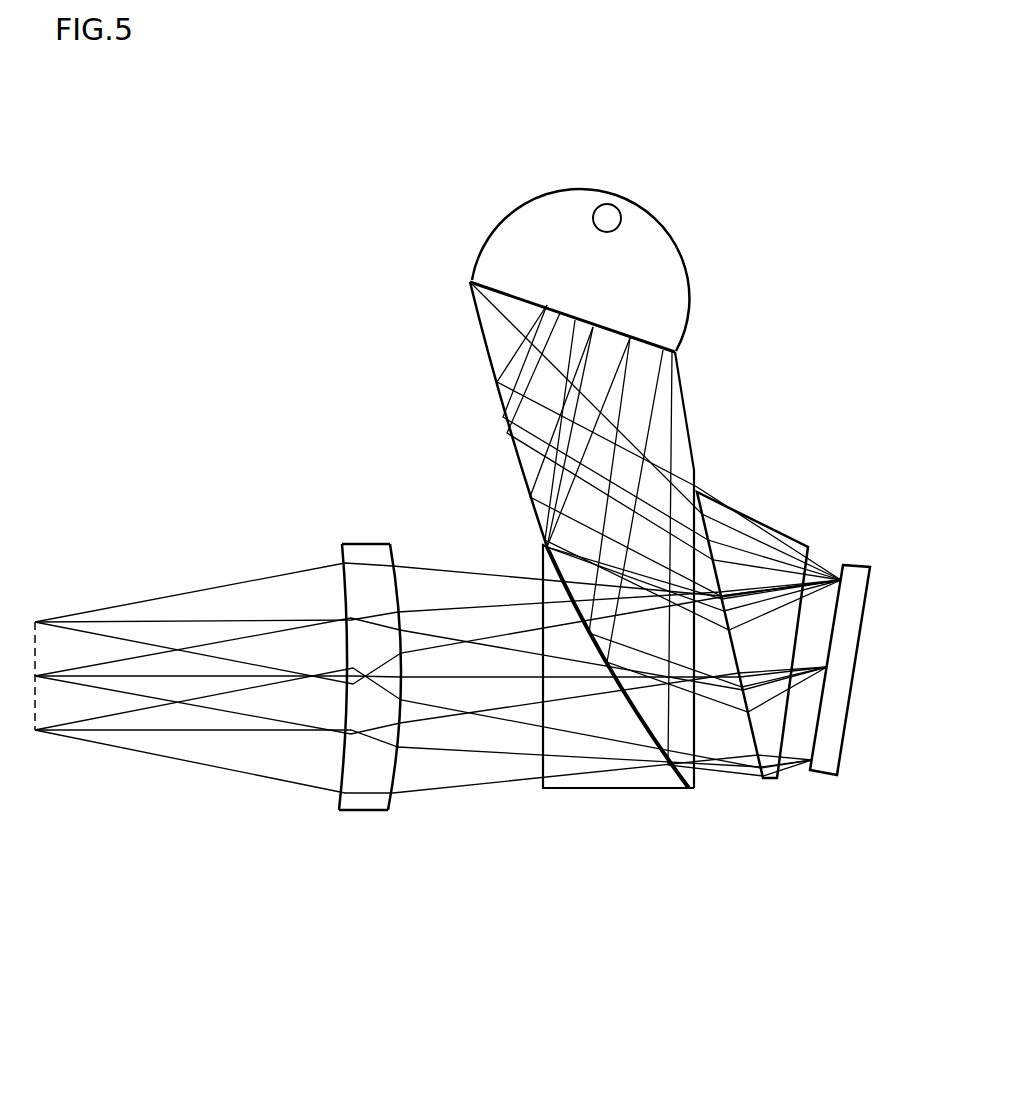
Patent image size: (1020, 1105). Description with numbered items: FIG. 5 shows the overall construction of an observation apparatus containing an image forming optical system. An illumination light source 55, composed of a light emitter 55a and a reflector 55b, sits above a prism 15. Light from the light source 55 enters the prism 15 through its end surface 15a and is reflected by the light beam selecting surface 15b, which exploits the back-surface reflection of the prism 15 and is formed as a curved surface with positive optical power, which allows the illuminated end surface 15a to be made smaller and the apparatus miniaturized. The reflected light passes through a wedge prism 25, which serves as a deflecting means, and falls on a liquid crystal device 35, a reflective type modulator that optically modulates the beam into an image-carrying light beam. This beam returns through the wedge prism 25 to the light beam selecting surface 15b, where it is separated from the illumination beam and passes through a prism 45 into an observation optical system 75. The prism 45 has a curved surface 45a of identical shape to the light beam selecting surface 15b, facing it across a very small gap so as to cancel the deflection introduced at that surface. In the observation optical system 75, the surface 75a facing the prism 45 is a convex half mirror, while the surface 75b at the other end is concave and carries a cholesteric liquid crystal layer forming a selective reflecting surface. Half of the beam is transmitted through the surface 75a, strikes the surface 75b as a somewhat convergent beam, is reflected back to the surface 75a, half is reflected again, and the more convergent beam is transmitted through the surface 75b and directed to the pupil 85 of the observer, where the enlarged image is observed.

The prism 15 is at (676, 432).
The end surface 15a is at (678, 353).
The light beam selecting surface 15b is at (691, 790).
The wedge prism 25 is at (745, 503).
The liquid crystal device 35 is at (852, 565).
The prism 45 is at (568, 786).
The curved surface 45a is at (682, 788).
The illumination light source 55 is at (763, 150).
The light emitter 55a is at (608, 218).
The reflector 55b is at (686, 247).
The observation optical system 75 is at (357, 803).
The surface 75a is at (392, 806).
The surface 75b is at (336, 805).
The pupil 85 is at (34, 732).